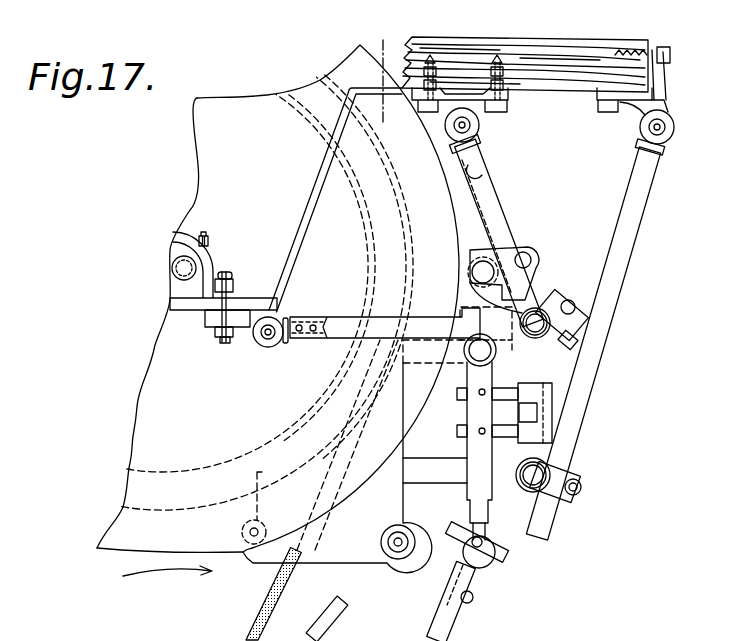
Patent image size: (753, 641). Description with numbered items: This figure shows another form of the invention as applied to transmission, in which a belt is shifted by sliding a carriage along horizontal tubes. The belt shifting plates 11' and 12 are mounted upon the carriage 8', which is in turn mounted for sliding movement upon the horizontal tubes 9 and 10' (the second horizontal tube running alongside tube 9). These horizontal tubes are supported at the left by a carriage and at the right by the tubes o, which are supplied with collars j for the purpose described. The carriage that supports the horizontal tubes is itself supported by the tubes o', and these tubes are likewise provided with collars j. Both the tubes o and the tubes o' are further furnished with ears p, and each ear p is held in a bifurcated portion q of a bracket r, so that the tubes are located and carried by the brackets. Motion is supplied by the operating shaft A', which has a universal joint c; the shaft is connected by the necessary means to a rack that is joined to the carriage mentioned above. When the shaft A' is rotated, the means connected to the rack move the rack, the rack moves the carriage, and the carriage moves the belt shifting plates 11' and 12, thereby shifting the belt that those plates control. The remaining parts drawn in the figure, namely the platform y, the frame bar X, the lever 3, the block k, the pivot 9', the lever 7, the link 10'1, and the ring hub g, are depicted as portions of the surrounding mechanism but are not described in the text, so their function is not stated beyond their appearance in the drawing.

The work platform board y is at (516, 42).
The bracket r is at (512, 98).
The ears p is at (675, 127).
The tubes o' is at (571, 340).
The belt shifting plate 12 is at (404, 94).
The frame bar X is at (296, 237).
The tubes o is at (385, 308).
The lever 3 is at (272, 583).
The belt shifting plate 11' is at (391, 558).
The carriage 8' is at (515, 451).
The block k is at (547, 410).
The pivot pin 9' is at (480, 259).
The lever 7 is at (505, 258).
The hub clamp 10' is at (560, 305).
The link 10'1 is at (517, 286).
The collars j is at (560, 322).
The ring hub g is at (540, 458).
The horizontal tube 9 is at (523, 492).
The bifurcated portion q is at (580, 495).
The universal joint c is at (507, 555).
The operating shaft A' is at (403, 601).